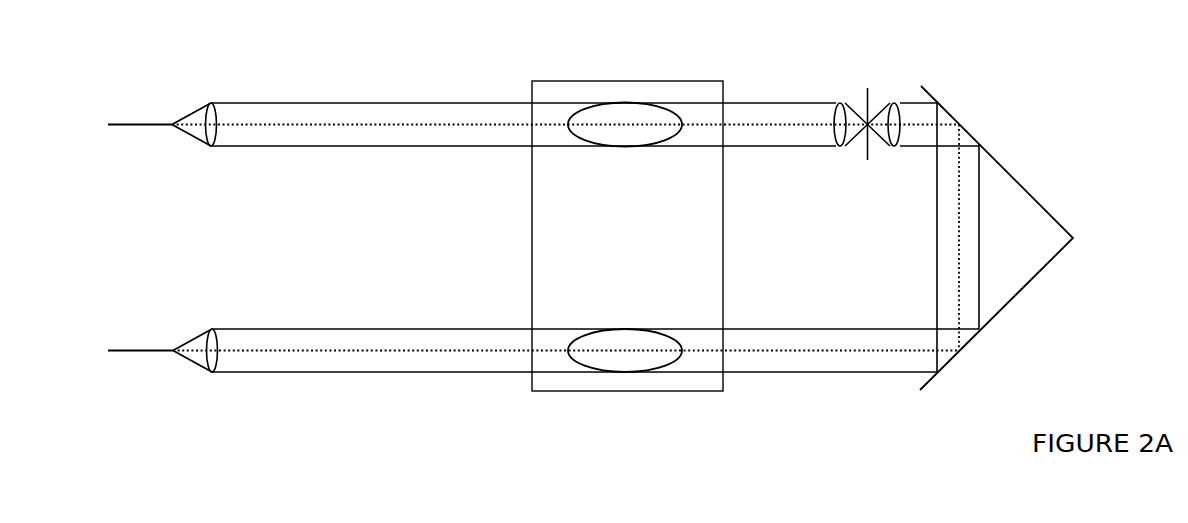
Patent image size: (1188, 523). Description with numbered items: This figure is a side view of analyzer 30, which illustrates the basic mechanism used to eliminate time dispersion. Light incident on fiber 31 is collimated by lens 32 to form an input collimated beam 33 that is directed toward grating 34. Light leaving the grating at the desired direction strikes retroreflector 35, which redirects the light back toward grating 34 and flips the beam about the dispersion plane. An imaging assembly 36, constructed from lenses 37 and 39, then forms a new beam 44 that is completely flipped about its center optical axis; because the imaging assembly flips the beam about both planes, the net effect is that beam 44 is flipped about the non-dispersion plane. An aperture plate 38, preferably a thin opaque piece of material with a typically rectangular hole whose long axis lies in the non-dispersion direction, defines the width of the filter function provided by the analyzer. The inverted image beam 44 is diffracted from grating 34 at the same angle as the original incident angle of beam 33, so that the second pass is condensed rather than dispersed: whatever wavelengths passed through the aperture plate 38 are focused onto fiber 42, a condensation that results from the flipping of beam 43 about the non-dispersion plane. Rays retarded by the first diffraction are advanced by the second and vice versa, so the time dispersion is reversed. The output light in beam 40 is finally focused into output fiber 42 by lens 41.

The analyzer 30 is at (74, 84).
The fiber 31 is at (158, 351).
The lens 32 is at (211, 373).
The input collimated beam 33 is at (385, 363).
The grating 34 is at (691, 386).
The retroreflector 35 is at (1034, 277).
The imaging assembly 36 is at (892, 124).
The lens 37 is at (845, 100).
The aperture plate 38 is at (866, 89).
The lens 39 is at (889, 100).
The beam 40 is at (382, 137).
The lens 41 is at (211, 146).
The output fiber 42 is at (150, 124).
The beam 43 is at (918, 134).
The beam 44 is at (778, 125).